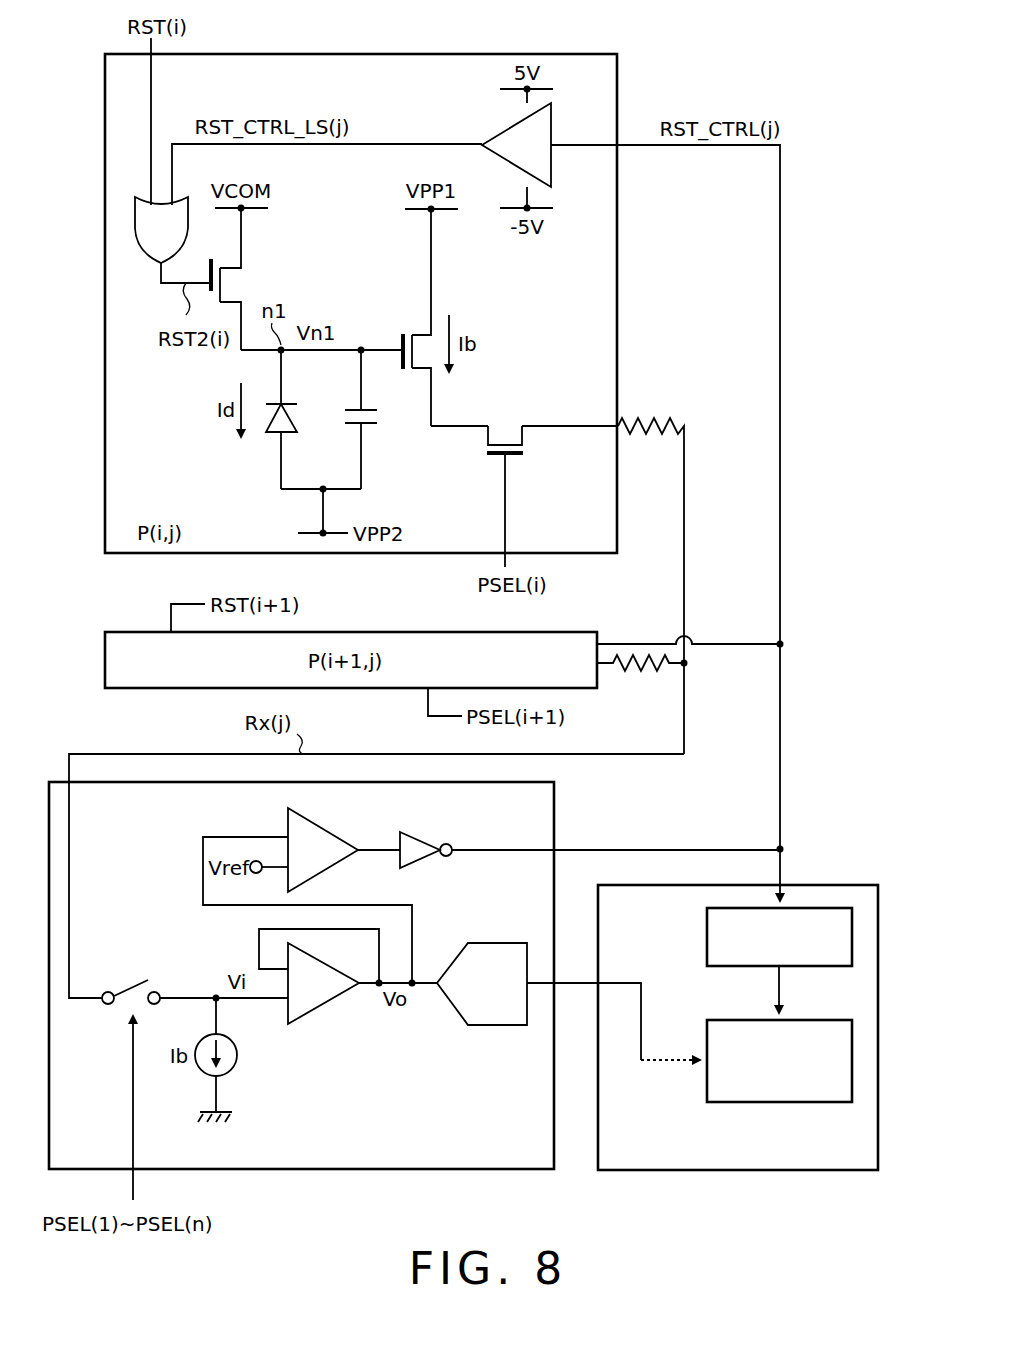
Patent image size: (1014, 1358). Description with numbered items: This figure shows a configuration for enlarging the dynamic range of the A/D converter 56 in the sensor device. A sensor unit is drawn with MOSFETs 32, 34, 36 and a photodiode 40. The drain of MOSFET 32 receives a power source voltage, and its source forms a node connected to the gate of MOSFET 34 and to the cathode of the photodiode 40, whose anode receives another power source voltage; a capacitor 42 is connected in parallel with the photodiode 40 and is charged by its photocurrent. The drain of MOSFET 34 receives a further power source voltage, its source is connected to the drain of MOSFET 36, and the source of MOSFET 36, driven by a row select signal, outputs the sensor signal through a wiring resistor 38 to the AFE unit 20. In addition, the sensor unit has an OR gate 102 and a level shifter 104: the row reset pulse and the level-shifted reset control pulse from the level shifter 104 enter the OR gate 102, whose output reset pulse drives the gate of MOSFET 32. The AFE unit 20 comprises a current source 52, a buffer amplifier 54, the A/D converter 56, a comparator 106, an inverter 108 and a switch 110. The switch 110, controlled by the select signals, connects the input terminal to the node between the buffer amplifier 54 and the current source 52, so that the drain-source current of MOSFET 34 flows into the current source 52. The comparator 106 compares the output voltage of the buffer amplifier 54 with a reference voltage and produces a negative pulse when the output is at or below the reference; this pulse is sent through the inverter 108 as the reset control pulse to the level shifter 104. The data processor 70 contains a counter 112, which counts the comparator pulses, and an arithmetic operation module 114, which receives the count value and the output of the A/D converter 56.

The OR gate 102 is at (140, 258).
The level shifter 104 is at (551, 120).
The MOSFET 32 is at (241, 282).
The MOSFET 34 is at (416, 332).
The MOSFET 36 is at (505, 432).
The resistor 38 is at (653, 416).
The photodiode 40 is at (296, 416).
The capacitor 42 is at (381, 418).
The comparator 106 is at (324, 830).
The inverter 108 is at (424, 832).
The switch 110 is at (128, 985).
The current source 52 is at (238, 1055).
The buffer amplifier 54 is at (325, 1006).
The A/D converter 56 is at (453, 1010).
The AFE unit 20 is at (554, 808).
The data processor 70 is at (831, 884).
The counter 112 is at (707, 937).
The arithmetic operation module 114 is at (707, 1030).